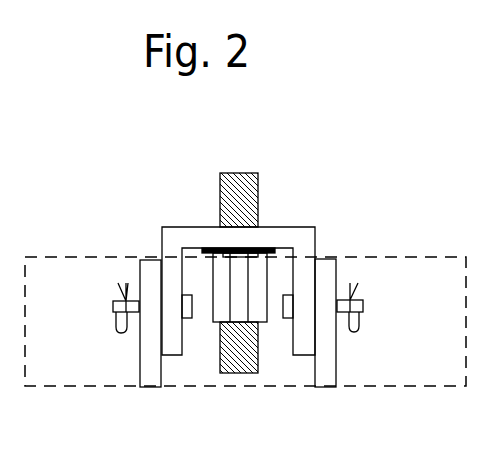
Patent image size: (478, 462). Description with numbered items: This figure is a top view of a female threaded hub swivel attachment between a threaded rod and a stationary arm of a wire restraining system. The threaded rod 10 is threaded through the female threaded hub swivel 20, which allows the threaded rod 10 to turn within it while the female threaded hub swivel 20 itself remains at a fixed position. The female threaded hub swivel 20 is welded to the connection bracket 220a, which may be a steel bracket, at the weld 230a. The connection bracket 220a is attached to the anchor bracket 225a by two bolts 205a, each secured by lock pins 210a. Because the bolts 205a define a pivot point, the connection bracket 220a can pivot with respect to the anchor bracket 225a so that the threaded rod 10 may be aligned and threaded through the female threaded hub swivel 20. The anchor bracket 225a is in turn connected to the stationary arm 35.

The threaded rod 10 is at (238, 175).
The female threaded hub swivel 20 is at (212, 322).
The stationary arm 35 is at (423, 381).
The bolts 205a is at (112, 303).
The lock pins 210a is at (115, 330).
The connection bracket 220a is at (202, 236).
The anchor bracket 225a is at (148, 362).
The weld 230a is at (258, 247).